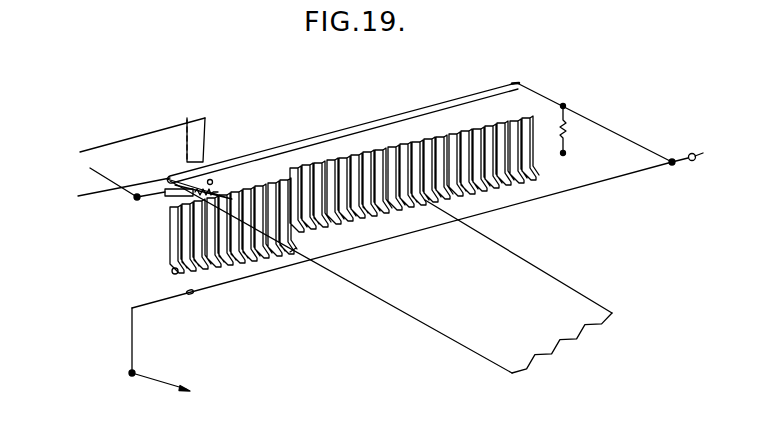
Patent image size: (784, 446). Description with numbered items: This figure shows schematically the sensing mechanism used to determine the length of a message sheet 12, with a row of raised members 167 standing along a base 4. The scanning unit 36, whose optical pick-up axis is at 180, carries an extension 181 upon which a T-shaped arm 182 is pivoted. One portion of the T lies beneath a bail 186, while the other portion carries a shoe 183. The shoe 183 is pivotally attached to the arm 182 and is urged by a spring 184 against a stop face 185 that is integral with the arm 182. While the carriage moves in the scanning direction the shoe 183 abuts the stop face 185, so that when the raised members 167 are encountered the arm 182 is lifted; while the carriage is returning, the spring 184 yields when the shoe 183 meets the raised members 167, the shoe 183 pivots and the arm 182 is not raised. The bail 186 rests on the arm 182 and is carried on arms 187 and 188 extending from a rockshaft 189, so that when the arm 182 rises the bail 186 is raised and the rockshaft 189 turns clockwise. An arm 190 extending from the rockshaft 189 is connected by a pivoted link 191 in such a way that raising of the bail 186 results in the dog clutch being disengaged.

The bead / pivot member 4 is at (173, 274).
The plate 12 is at (530, 288).
The scanning unit 36 is at (198, 142).
The raised members 167 is at (437, 144).
The optical pick-up axis 180 is at (188, 118).
The extension 181 is at (137, 197).
The arm 182 is at (150, 190).
The shoe 183 is at (226, 197).
The spring 184 is at (190, 196).
The stop face 185 is at (200, 178).
The bail 186 is at (380, 120).
The arm 187 is at (294, 255).
The arm 188 is at (600, 107).
The rockshaft 189 is at (508, 207).
The arm 190 is at (132, 318).
The pivoted link 191 is at (160, 382).